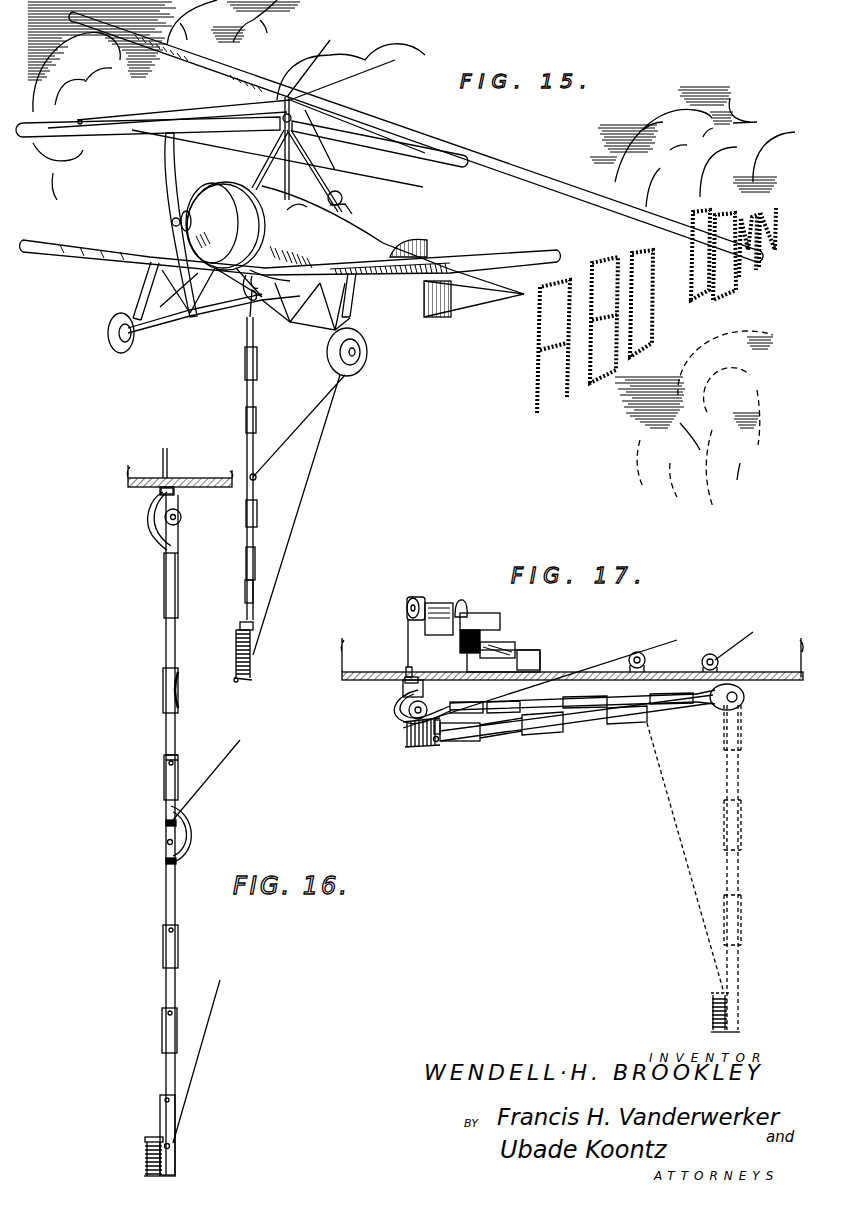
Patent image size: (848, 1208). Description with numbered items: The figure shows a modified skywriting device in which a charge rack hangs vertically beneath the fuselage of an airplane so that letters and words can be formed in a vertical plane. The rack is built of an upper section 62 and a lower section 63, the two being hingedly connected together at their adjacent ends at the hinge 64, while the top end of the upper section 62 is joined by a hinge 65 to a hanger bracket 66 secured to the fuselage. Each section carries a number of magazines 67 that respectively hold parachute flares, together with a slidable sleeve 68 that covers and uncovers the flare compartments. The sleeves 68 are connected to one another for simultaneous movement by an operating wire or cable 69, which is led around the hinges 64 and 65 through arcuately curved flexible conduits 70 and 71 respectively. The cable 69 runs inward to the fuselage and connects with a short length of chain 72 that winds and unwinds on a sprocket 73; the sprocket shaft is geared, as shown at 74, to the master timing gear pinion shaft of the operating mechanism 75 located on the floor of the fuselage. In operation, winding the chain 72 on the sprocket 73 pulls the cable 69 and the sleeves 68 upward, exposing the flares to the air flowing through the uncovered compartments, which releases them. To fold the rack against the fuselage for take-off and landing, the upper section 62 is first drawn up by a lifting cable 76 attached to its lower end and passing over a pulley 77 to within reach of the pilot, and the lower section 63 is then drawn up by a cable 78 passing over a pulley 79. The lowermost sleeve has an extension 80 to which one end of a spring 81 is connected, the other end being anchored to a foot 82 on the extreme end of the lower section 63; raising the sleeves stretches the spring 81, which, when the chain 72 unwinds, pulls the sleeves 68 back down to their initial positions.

In FIG. 16, the upper section 62 is at (173, 647).
In FIG. 16, the lower section 63 is at (182, 981).
In FIG. 17, the lower section 63 is at (422, 743).
In FIG. 15, the hinge 64 is at (258, 477).
In FIG. 16, the hinge 64 is at (166, 842).
In FIG. 17, the hinge 64 is at (743, 692).
In FIG. 15, the hinge 65 is at (249, 313).
In FIG. 16, the hinge 65 is at (182, 517).
In FIG. 17, the hinge 65 is at (425, 704).
In FIG. 15, the hanger bracket 66 is at (275, 274).
In FIG. 16, the hanger bracket 66 is at (157, 497).
In FIG. 17, the hanger bracket 66 is at (405, 697).
In FIG. 16, the magazines 67 is at (179, 695).
In FIG. 16, the slidable sleeve 68 is at (168, 780).
In FIG. 17, the slidable sleeve 68 is at (470, 743).
In FIG. 16, the operating wire or cable 69 is at (167, 763).
In FIG. 17, the operating wire or cable 69 is at (510, 736).
In FIG. 16, the flexible conduit 70 is at (192, 842).
In FIG. 17, the flexible conduit 70 is at (745, 707).
In FIG. 16, the flexible conduit 71 is at (150, 518).
In FIG. 17, the flexible conduit 71 is at (403, 718).
In FIG. 17, the chain 72 is at (408, 601).
In FIG. 17, the sprocket 73 is at (418, 597).
In FIG. 17, the gearing 74 is at (463, 607).
In FIG. 17, the operating mechanism 75 is at (487, 657).
In FIG. 17, the lifting cable 76 is at (747, 636).
In FIG. 17, the pulley 77 is at (712, 655).
In FIG. 17, the cable 78 is at (604, 670).
In FIG. 17, the pulley 79 is at (643, 657).
In FIG. 15, the extension 80 is at (255, 626).
In FIG. 16, the extension 80 is at (150, 1138).
In FIG. 17, the extension 80 is at (446, 721).
In FIG. 15, the spring 81 is at (252, 660).
In FIG. 16, the spring 81 is at (147, 1157).
In FIG. 17, the spring 81 is at (412, 741).
In FIG. 15, the foot 82 is at (238, 683).
In FIG. 16, the foot 82 is at (147, 1174).
In FIG. 17, the foot 82 is at (714, 1032).